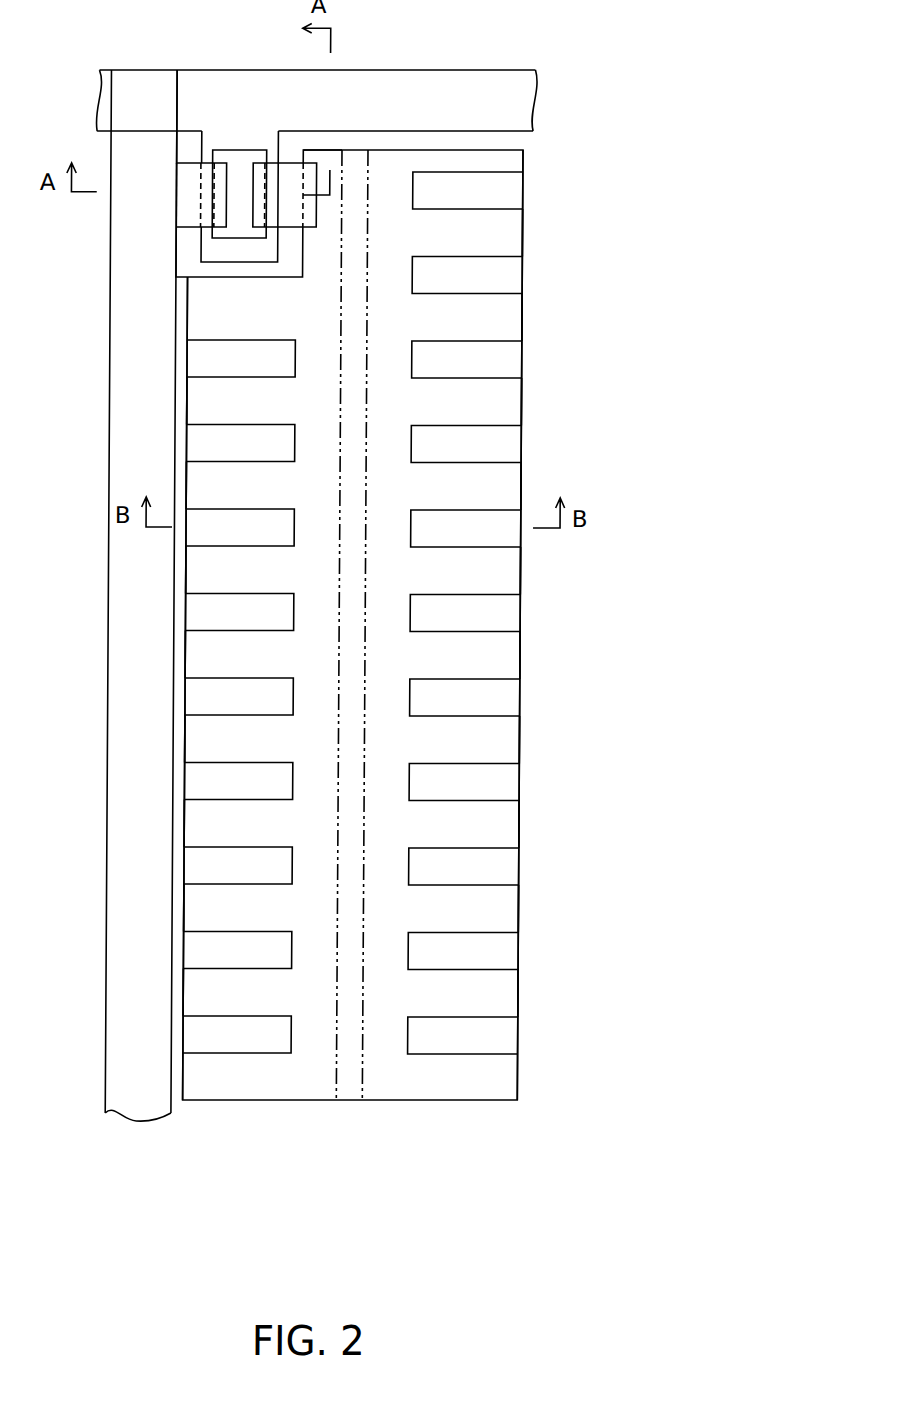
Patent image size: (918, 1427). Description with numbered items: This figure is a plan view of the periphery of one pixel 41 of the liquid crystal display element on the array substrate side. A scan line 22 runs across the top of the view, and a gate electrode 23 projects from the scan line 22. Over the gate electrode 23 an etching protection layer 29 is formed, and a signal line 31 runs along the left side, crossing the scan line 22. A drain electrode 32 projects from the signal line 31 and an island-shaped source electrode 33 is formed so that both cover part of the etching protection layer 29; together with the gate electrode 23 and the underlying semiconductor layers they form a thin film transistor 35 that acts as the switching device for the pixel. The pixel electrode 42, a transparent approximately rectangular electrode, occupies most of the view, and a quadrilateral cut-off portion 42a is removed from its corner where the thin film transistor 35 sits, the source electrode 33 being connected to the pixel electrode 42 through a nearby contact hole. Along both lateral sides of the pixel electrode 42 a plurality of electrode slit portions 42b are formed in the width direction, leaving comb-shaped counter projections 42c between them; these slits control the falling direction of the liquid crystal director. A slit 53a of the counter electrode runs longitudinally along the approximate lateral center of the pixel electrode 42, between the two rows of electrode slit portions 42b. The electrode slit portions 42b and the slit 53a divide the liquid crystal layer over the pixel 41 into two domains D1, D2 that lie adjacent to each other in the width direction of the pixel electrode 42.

The scan line 22 is at (433, 82).
The gate electrode 23 is at (207, 146).
The etching protection layer 29 is at (240, 150).
The signal line 31 is at (117, 306).
The drain electrode 32 is at (184, 218).
The source electrode 33 is at (308, 163).
The thin film transistor 35 is at (188, 173).
The pixel 41 is at (532, 157).
The pixel electrode 42 is at (523, 223).
The cut-off portion 42a is at (190, 274).
The electrode slit portion 42b is at (508, 207).
The counter projection 42c is at (513, 241).
The slit 53a is at (368, 1080).
The domain D1 is at (223, 665).
The domain D2 is at (411, 665).